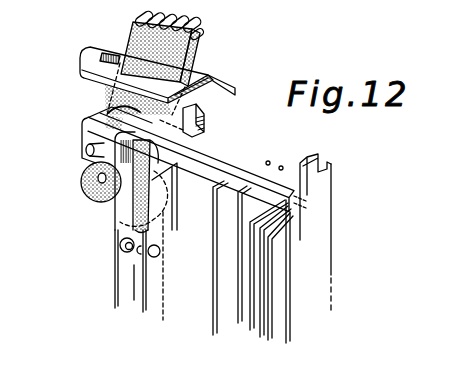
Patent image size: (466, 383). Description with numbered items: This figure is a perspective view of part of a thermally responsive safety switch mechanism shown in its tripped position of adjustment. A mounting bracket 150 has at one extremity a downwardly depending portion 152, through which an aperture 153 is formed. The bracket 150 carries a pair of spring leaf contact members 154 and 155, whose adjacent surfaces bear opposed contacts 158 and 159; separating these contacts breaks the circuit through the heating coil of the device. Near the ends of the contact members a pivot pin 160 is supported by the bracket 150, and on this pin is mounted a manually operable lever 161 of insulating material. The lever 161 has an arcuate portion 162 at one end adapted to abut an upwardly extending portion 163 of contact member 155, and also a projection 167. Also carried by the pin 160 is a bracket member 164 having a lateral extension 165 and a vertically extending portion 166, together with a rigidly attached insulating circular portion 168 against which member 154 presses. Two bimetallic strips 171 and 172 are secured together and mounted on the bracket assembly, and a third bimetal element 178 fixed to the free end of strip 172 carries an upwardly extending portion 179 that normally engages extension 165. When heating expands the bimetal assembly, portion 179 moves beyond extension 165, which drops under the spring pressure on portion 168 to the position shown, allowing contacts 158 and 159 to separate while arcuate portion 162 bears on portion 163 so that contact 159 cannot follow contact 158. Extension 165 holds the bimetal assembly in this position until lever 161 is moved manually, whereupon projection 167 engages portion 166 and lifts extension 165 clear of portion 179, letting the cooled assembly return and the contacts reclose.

The mounting bracket 150 is at (227, 93).
The second downwardly depending portion 152 is at (93, 57).
The aperture 153 is at (116, 54).
The spring leaf contact member 154 is at (123, 273).
The spring leaf contact member 155 is at (155, 274).
The contact 158 is at (119, 247).
The contact 159 is at (158, 248).
The pivot pin 160 is at (92, 153).
The manually operable lever 161 is at (200, 41).
The arcuate portion 162 is at (109, 207).
The upwardly extending portion 163 is at (172, 188).
The bracket member 164 is at (88, 128).
The lateral extension 165 is at (212, 152).
The vertically extending portion 166 is at (200, 112).
The projection 167 is at (208, 93).
The circular portion 168 is at (88, 182).
The bimetallic strip 171 is at (208, 295).
The bimetallic strip 172 is at (245, 298).
The third bimetal element 178 is at (320, 216).
The upwardly extending portion 179 is at (324, 162).